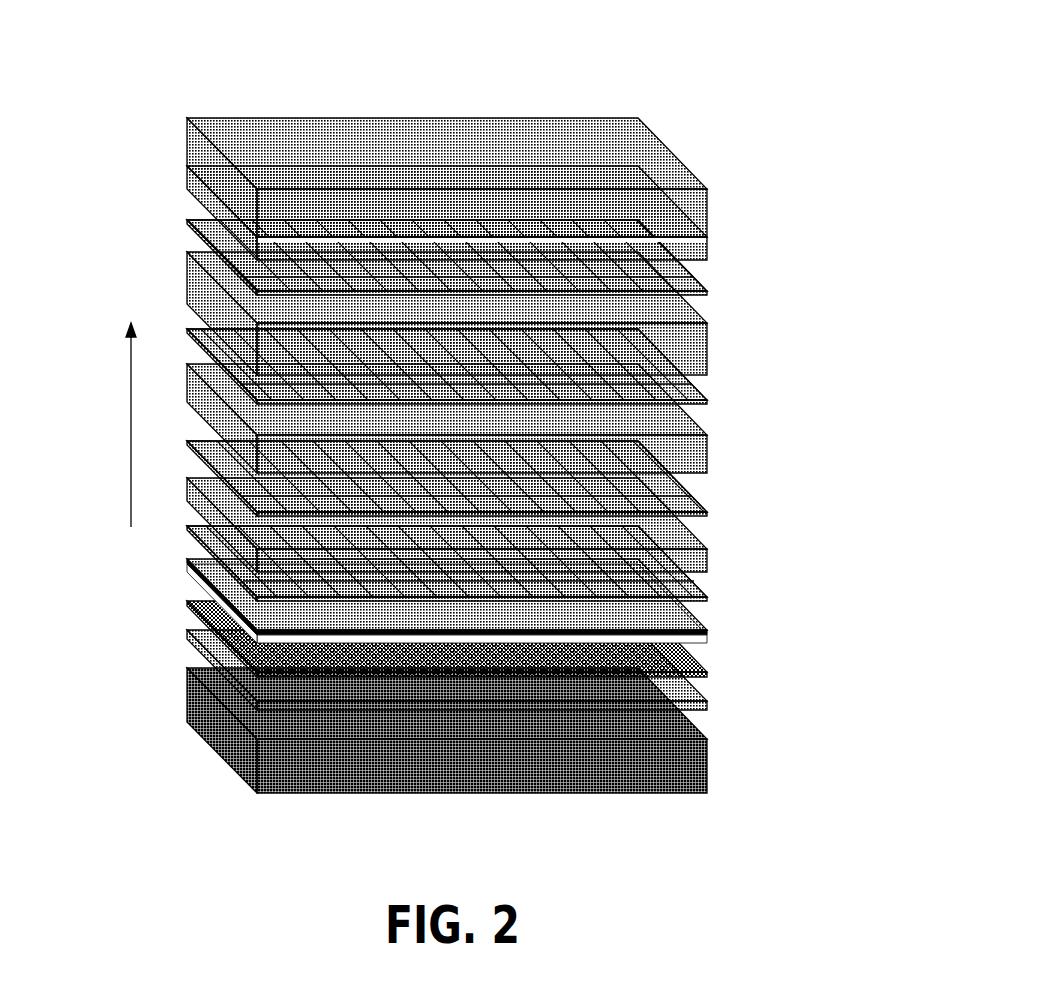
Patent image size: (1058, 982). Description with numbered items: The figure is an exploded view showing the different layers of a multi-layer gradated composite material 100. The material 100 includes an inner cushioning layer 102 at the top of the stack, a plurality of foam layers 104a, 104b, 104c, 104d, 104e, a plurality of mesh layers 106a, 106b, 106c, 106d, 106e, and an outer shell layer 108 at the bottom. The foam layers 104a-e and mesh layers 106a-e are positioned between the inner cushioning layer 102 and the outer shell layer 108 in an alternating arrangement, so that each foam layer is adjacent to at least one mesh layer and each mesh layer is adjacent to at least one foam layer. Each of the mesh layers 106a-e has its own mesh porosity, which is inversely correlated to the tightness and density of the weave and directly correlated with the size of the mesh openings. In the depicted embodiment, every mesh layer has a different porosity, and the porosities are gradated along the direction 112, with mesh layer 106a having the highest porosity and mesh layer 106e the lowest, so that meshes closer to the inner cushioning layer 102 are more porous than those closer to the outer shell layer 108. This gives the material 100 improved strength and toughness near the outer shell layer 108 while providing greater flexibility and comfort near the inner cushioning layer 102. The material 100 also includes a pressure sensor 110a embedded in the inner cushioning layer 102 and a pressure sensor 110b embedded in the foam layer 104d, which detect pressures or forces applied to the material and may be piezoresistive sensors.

The multi-layer gradated composite material 100 is at (567, 52).
The inner cushioning layer 102 is at (187, 131).
The foam layer 104a is at (708, 350).
The foam layer 104b is at (708, 452).
The foam layer 104c is at (708, 560).
The foam layer 104d is at (708, 632).
The foam layer 104e is at (708, 705).
The mesh layer 106a is at (708, 294).
The mesh layer 106b is at (708, 400).
The mesh layer 106c is at (708, 508).
The mesh layer 106d is at (708, 595).
The mesh layer 106e is at (708, 668).
The outer shell layer 108 is at (187, 705).
The pressure sensor 110a is at (708, 237).
The pressure sensor 110b is at (708, 640).
The direction 112 is at (130, 410).